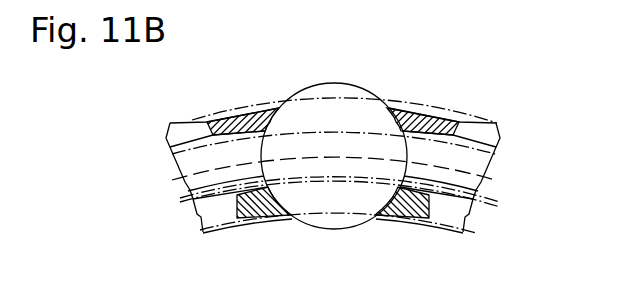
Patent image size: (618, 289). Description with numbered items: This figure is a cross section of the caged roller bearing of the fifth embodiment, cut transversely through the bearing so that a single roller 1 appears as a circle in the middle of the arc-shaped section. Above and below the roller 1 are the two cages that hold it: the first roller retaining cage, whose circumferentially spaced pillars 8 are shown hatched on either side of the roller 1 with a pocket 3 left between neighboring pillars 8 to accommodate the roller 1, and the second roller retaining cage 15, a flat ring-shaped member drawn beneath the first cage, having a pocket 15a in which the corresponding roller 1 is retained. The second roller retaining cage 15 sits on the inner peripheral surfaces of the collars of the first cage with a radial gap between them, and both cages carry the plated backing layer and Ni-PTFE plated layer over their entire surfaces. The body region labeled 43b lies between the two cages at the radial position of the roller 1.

The roller 1 is at (357, 84).
The pocket 3 is at (391, 110).
The pillar 8 is at (237, 118).
The second roller retaining cage 15 is at (197, 222).
The pocket 15a is at (386, 203).
The ring body 43b is at (470, 163).